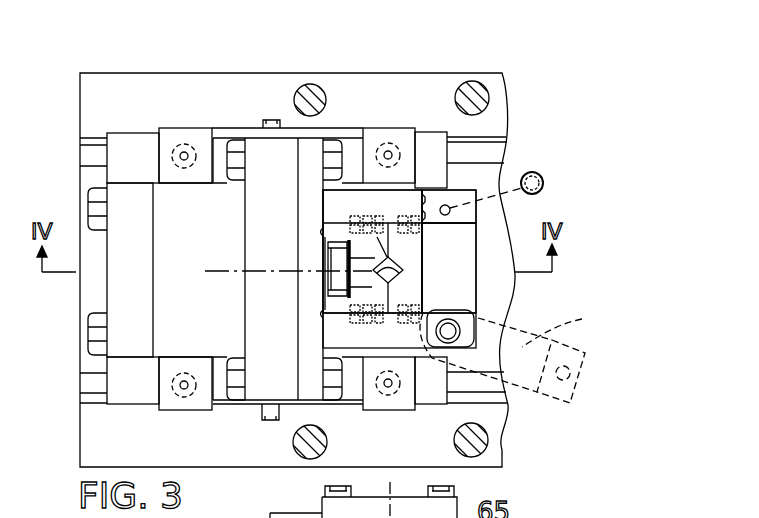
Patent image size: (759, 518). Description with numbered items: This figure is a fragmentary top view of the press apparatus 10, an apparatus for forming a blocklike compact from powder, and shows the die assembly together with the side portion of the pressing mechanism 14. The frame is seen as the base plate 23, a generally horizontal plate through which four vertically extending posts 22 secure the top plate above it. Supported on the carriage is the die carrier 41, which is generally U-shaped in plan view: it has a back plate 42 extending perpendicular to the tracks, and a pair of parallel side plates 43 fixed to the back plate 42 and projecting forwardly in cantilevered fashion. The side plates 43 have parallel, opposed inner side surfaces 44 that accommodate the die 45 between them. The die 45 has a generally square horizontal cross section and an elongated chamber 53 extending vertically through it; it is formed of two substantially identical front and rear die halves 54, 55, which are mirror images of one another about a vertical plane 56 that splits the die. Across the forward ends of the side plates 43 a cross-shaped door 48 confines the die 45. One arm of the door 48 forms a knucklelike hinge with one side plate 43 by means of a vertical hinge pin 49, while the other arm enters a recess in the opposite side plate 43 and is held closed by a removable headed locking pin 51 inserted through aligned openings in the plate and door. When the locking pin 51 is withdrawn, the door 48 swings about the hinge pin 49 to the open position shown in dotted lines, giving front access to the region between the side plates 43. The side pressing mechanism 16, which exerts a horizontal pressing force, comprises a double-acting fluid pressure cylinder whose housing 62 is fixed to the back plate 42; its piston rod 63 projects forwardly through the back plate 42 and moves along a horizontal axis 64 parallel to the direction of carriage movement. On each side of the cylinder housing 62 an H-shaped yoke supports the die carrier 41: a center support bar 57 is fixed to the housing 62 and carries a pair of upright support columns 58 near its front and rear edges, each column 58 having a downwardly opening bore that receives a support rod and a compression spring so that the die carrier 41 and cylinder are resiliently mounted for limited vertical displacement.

The press apparatus 10 is at (560, 100).
The pressing mechanism 14 is at (478, 230).
The side pressing mechanism 16 is at (106, 291).
The vertically extending posts 22 is at (475, 98).
The base plate 23 is at (184, 98).
The die carrier 41 is at (350, 194).
The back plate 42 is at (310, 150).
The side plates 43 is at (410, 198).
The inner side surfaces 44 is at (318, 232).
The die 45 is at (426, 275).
The door 48 is at (457, 260).
The hinge pin 49 is at (450, 338).
The locking pin 51 is at (529, 171).
The chamber 53 is at (384, 276).
The front die half 54 is at (457, 243).
The rear die half 55 is at (372, 252).
The vertical plane 56 is at (384, 257).
The center support bar 57 is at (220, 137).
The support columns 58 is at (170, 135).
The cylinder housing 62 is at (122, 213).
The piston rod 63 is at (337, 283).
The axis 64 is at (236, 271).